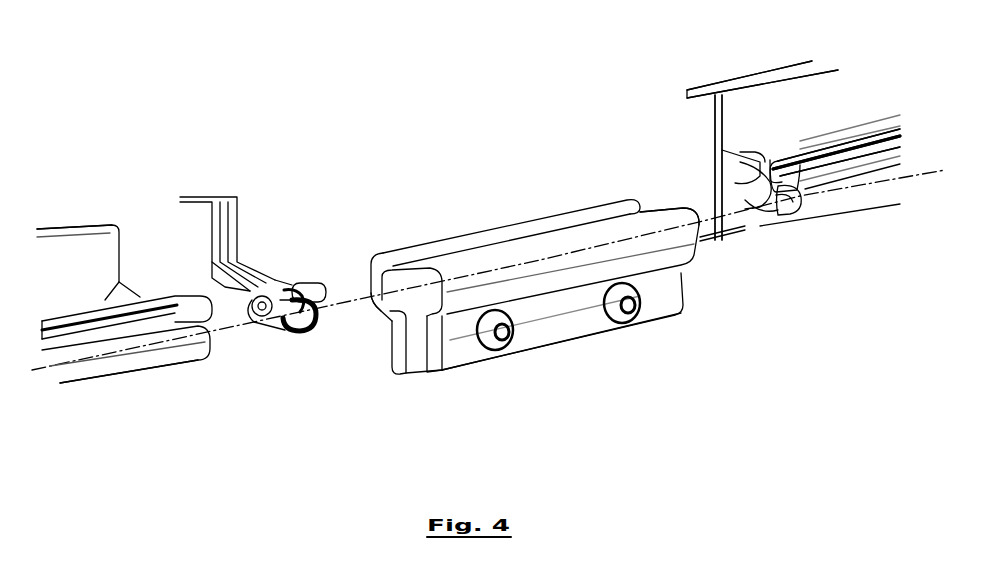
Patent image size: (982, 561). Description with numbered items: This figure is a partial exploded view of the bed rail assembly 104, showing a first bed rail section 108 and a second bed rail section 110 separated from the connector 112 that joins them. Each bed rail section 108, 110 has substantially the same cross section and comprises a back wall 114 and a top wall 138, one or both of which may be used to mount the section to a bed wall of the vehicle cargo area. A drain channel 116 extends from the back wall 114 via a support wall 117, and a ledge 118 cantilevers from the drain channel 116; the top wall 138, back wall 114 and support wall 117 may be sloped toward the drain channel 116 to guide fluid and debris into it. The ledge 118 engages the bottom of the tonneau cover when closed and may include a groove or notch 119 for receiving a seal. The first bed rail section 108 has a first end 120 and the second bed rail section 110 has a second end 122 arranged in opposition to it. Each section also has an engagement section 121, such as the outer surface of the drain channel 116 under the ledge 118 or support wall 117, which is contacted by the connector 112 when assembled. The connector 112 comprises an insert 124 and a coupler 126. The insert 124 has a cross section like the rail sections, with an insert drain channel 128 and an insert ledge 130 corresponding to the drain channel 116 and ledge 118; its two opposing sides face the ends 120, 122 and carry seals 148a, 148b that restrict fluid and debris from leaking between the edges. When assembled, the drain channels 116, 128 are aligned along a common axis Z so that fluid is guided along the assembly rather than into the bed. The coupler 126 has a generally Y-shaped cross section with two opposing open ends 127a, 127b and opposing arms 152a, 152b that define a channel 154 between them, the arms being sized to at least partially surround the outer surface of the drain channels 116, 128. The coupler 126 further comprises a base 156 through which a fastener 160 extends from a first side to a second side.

The bed rail assembly 104 is at (275, 124).
The first bed rail section 108 is at (474, 244).
The second bed rail section 110 is at (811, 98).
The connector 112 is at (353, 160).
The back wall 114 is at (82, 250).
The drain channel 116 is at (115, 372).
The support wall 117 is at (105, 300).
The ledge 118 is at (158, 310).
The groove or notch 119 is at (782, 166).
The first end 120 is at (208, 343).
The engagement section 121 is at (147, 340).
The second end 122 is at (793, 217).
The insert 124 is at (261, 227).
The coupler 126 is at (597, 205).
The first open end 127a is at (400, 298).
The second open end 127b is at (656, 203).
The insert drain channel 128 is at (265, 328).
The insert ledge 130 is at (297, 280).
The top wall 138 is at (53, 228).
The first seal 148a is at (297, 328).
The second seal 148b is at (318, 315).
The first arm 152a is at (456, 298).
The second arm 152b is at (395, 250).
The channel 154 is at (410, 297).
The base 156 is at (542, 338).
The fastener 160 is at (503, 340).
The common axis Z is at (921, 180).